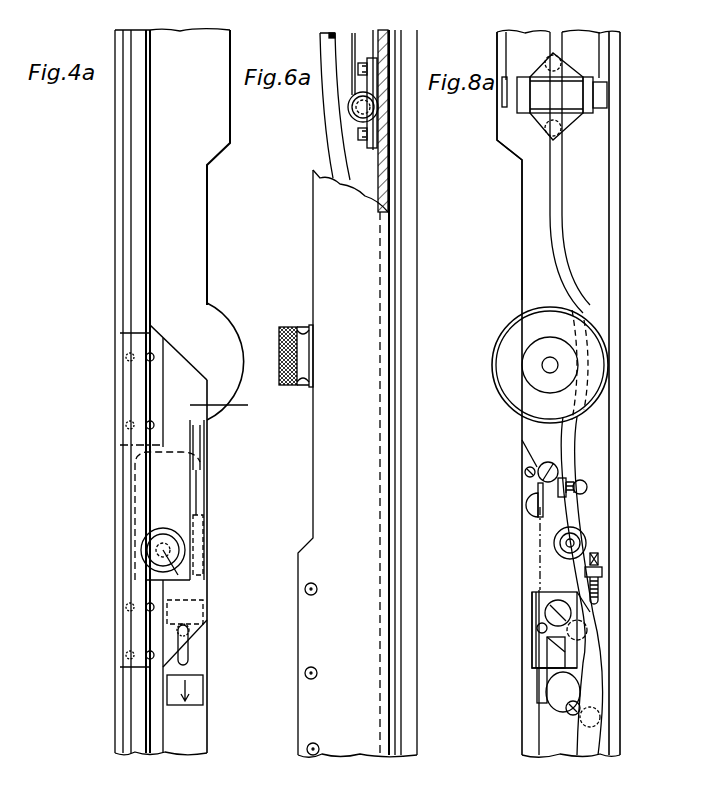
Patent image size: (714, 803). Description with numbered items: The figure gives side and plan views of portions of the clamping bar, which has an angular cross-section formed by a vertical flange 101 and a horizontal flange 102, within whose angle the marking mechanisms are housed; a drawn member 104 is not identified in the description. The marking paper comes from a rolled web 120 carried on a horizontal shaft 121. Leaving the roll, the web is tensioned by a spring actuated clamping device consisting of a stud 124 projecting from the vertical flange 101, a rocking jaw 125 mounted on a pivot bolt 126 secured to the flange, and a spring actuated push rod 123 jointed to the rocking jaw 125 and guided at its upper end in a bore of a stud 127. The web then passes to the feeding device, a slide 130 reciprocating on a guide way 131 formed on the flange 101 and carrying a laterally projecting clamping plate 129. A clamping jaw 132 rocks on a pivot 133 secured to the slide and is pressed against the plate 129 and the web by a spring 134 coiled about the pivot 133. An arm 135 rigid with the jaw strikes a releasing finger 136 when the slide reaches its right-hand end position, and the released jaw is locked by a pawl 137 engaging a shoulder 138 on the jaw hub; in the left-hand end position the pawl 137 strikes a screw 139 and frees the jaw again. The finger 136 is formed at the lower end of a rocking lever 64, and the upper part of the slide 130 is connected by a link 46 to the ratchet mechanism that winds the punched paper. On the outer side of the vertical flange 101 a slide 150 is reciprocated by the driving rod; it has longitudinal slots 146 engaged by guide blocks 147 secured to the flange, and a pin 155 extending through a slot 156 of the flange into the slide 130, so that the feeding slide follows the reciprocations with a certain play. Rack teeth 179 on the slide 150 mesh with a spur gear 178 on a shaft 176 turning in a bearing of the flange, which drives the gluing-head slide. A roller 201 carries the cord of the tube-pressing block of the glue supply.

In FIG. 4a, the vertical flange 101 is at (225, 345).
In FIG. 6a, the vertical flange 101 is at (390, 134).
In FIG. 6a, the horizontal flange 102 is at (328, 220).
In FIG. 8a, the horizontal flange 102 is at (612, 163).
In FIG. 8a, the band 104 is at (532, 226).
In FIG. 8a, the rolled web 120 is at (600, 393).
In FIG. 8a, the horizontal shaft 121 is at (553, 365).
In FIG. 8a, the spring actuated push rod 123 is at (588, 487).
In FIG. 8a, the stud 124 is at (535, 508).
In FIG. 8a, the rocking jaw 125 is at (538, 520).
In FIG. 8a, the pivot bolt 126 is at (558, 468).
In FIG. 8a, the stud 127 is at (566, 494).
In FIG. 8a, the clamping plate 129 is at (537, 666).
In FIG. 8a, the slide 130 is at (585, 668).
In FIG. 8a, the guide way 131 is at (537, 697).
In FIG. 8a, the clamping jaw 132 is at (548, 655).
In FIG. 8a, the pivot 133 is at (553, 606).
In FIG. 8a, the spring 134 is at (544, 615).
In FIG. 8a, the arm 135 is at (583, 648).
In FIG. 8a, the releasing finger 136 is at (563, 690).
In FIG. 8a, the pawl 137 is at (599, 595).
In FIG. 8a, the shoulder 138 is at (597, 608).
In FIG. 8a, the screw 139 is at (600, 557).
In FIG. 4a, the longitudinal slots 146 is at (198, 486).
In FIG. 4a, the guide blocks 147 is at (200, 545).
In FIG. 4a, the slide 150 is at (237, 399).
In FIG. 6a, the slide 150 is at (296, 356).
In FIG. 4a, the pin 155 is at (205, 628).
In FIG. 4a, the slot 156 is at (183, 652).
In FIG. 4a, the shaft 176 is at (187, 578).
In FIG. 4a, the spur gear 178 is at (173, 527).
In FIG. 4a, the rack teeth 179 is at (198, 465).
In FIG. 6a, the roller 201 is at (375, 107).
In FIG. 8a, the roller 201 is at (600, 100).
In FIG. 8a, the link 46 is at (597, 717).
In FIG. 8a, the rocking lever 64 is at (578, 720).